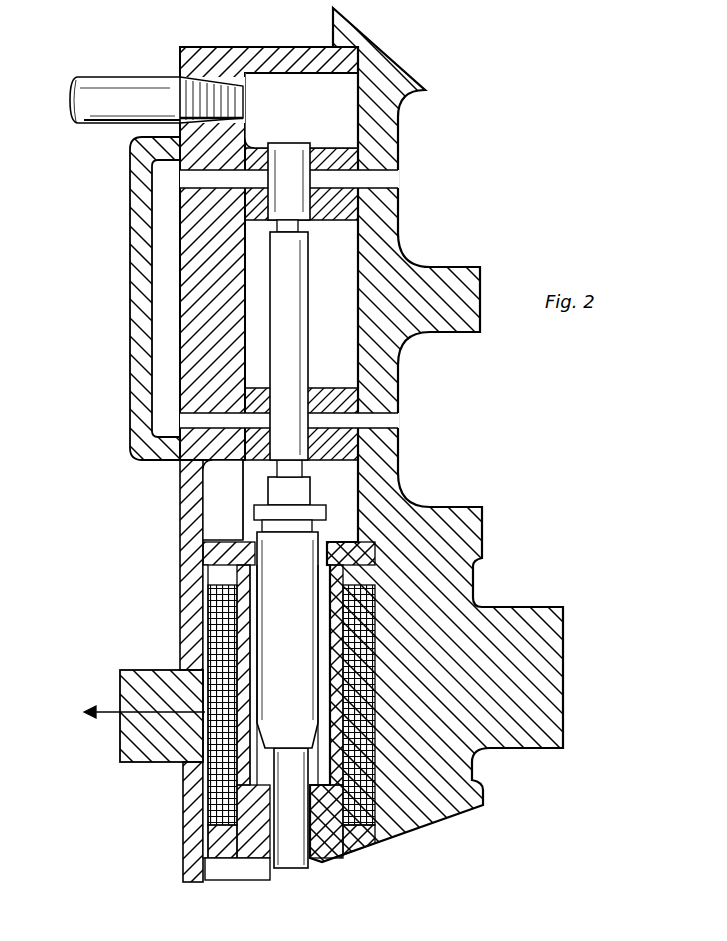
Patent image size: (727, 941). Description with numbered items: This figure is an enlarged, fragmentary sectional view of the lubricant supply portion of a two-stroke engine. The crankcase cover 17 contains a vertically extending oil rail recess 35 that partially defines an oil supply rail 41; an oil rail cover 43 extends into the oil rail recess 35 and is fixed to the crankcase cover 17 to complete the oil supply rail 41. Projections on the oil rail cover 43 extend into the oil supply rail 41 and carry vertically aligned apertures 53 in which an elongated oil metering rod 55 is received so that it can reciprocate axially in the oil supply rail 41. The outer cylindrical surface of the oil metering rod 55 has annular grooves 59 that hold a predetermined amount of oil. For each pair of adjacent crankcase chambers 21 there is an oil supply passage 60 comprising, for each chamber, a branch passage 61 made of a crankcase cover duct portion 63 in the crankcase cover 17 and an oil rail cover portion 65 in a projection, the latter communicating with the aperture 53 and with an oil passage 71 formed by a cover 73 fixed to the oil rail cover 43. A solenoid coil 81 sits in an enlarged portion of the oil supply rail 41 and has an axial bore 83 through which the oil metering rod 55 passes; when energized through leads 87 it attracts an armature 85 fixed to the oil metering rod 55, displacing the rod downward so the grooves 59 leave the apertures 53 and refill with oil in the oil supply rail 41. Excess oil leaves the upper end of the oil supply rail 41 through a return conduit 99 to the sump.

The crankcase cover 17 is at (512, 660).
The crankcase chambers 21 is at (462, 268).
The oil rail recess 35 is at (238, 883).
The oil supply rail 41 is at (264, 94).
The oil rail cover 43 is at (192, 625).
The apertures 53 is at (286, 190).
The oil metering rod 55 is at (290, 276).
The annular grooves 59 is at (305, 228).
The oil supply passage 60 is at (176, 288).
The branch passage 61 is at (368, 160).
The crankcase cover duct portion 63 is at (395, 180).
The oil rail cover portion 65 is at (290, 156).
The oil passage 71 is at (165, 333).
The cover 73 is at (138, 246).
The solenoid coil 81 is at (376, 626).
The axial bore 83 is at (330, 758).
The armature 85 is at (305, 548).
The leads 87 is at (100, 718).
The return conduit 99 is at (96, 78).